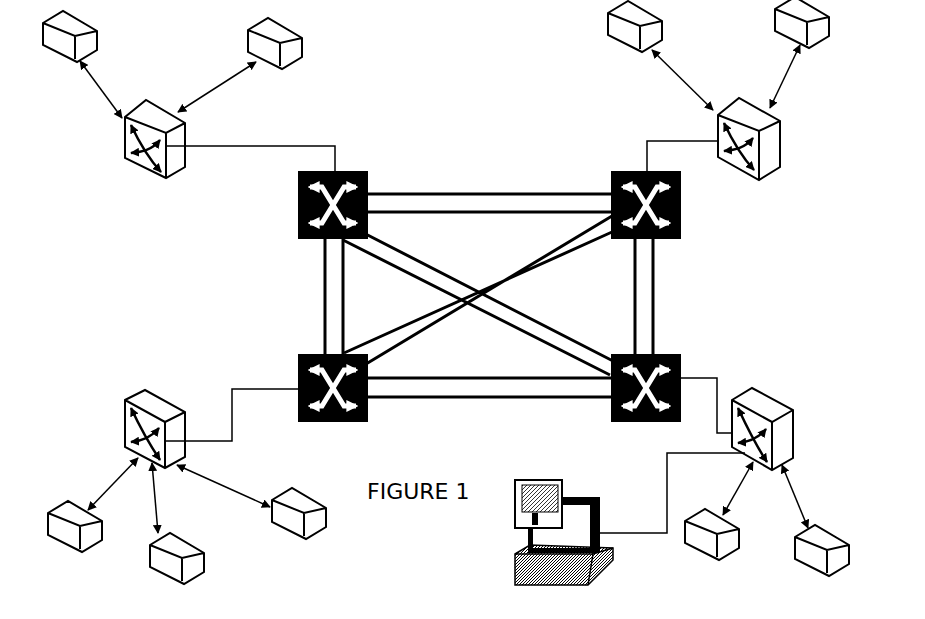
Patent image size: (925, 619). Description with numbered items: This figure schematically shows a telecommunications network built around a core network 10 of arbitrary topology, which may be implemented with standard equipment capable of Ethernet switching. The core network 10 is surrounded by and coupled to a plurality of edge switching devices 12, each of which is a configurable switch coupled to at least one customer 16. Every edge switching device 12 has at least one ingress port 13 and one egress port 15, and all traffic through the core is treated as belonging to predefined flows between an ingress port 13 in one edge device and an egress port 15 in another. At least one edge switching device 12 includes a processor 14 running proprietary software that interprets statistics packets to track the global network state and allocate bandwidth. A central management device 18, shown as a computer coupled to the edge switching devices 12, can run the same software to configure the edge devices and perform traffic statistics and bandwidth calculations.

The core network 10 is at (480, 117).
The edge switching device 12 is at (444, 284).
The ingress port 13 is at (130, 147).
The processor 14 is at (186, 168).
The egress port 15 is at (163, 142).
The customer 16 is at (662, 30).
The management computer 18 is at (603, 508).